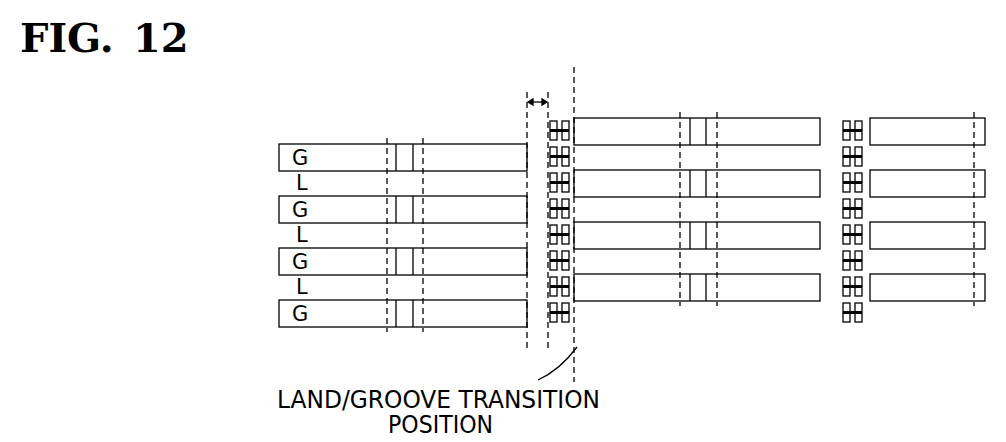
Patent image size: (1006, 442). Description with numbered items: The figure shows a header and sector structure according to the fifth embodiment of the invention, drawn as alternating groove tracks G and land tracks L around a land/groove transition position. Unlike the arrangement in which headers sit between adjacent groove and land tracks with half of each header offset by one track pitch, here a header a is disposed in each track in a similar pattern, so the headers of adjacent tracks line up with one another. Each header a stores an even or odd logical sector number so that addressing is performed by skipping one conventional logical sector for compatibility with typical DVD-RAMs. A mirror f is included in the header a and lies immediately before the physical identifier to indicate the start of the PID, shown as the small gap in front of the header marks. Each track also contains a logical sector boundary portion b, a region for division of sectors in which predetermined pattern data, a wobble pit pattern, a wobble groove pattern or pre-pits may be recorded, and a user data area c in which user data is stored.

The header a is at (560, 97).
The logical sector boundary portion b is at (697, 194).
The user data area c is at (748, 307).
The mirror f is at (832, 128).